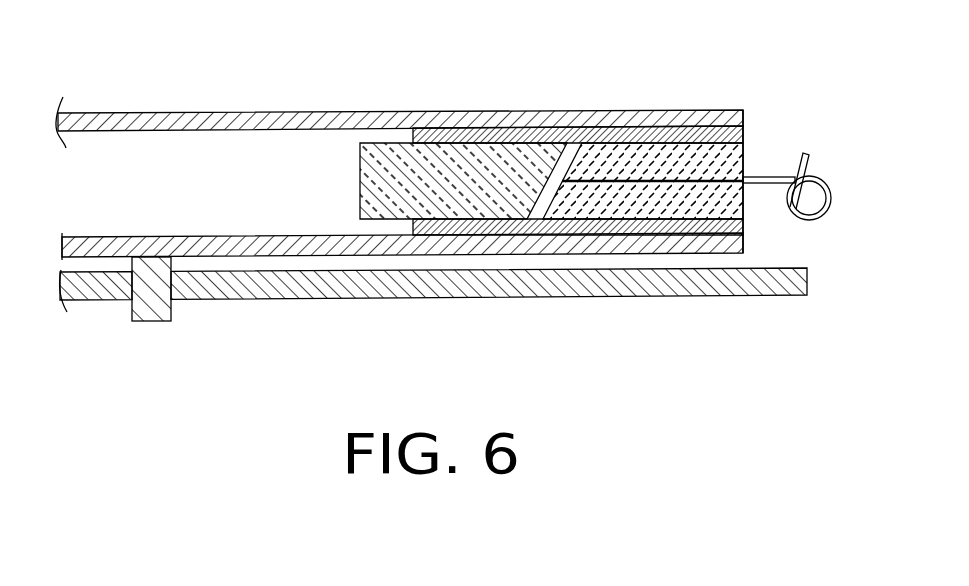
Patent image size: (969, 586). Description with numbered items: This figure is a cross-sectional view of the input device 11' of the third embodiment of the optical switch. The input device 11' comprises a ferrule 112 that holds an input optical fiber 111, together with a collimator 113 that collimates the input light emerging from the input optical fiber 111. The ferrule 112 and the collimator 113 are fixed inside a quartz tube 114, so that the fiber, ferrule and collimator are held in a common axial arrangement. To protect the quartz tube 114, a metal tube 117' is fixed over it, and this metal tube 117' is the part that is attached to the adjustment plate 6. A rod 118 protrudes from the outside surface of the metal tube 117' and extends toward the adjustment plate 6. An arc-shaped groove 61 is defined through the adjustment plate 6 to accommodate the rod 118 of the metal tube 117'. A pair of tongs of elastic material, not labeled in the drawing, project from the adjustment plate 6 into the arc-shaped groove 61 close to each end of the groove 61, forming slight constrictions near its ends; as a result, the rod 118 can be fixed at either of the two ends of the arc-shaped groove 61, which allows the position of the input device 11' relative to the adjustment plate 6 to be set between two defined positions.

The input device 11' is at (399, 145).
The metal tube 117' is at (578, 144).
The collimator 113 is at (457, 167).
The ferrule 112 is at (673, 203).
The quartz tube 114 is at (731, 112).
The input optical fiber 111 is at (777, 175).
The adjustment plate 6 is at (660, 280).
The arc-shaped groove 61 is at (187, 290).
The rod 118 is at (150, 310).